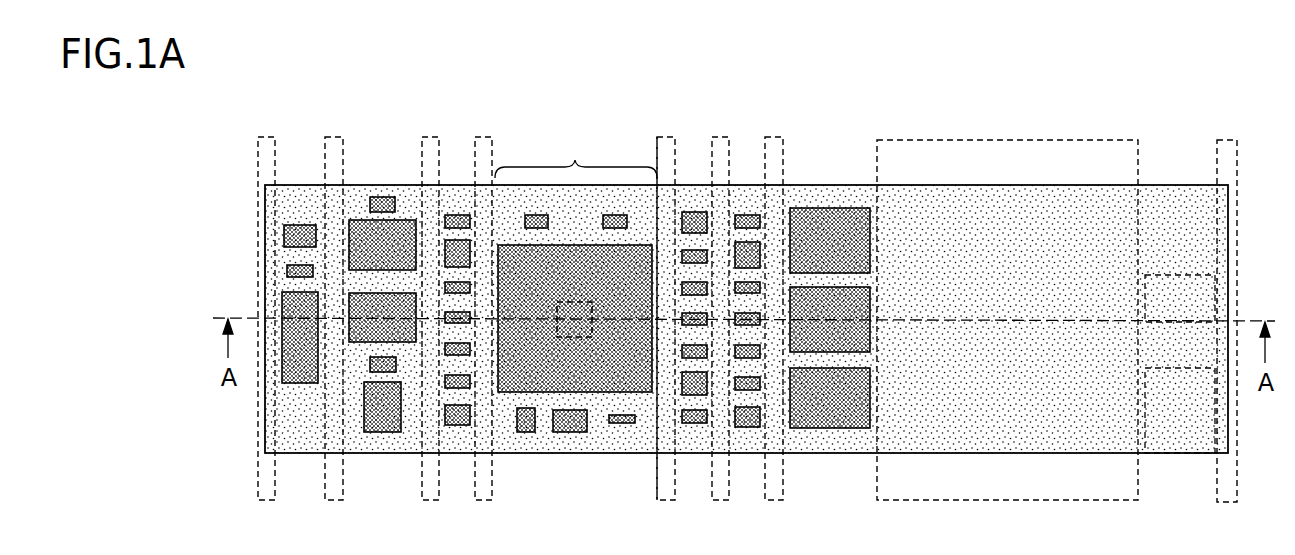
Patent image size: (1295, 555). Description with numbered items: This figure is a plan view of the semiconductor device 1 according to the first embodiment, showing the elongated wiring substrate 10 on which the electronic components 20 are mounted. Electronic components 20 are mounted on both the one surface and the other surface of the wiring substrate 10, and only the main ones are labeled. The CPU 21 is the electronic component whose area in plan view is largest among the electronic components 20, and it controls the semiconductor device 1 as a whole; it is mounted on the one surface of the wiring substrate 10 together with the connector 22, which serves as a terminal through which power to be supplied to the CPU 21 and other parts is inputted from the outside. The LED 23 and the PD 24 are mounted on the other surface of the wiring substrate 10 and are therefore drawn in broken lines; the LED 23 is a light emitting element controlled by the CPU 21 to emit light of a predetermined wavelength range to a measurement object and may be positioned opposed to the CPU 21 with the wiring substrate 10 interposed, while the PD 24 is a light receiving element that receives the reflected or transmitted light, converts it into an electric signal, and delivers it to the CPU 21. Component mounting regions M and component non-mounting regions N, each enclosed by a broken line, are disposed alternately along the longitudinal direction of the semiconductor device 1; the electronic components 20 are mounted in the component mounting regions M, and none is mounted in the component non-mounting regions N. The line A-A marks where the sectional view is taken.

The semiconductor device 1 is at (254, 70).
The wiring substrate 10 is at (1182, 203).
The electronic components 20 is at (376, 433).
The CPU 21 is at (512, 378).
The connector 22 is at (830, 417).
The LED 23 is at (587, 343).
The PD 24 is at (1180, 455).
The component mounting regions M is at (574, 162).
The component non-mounting regions N is at (660, 136).